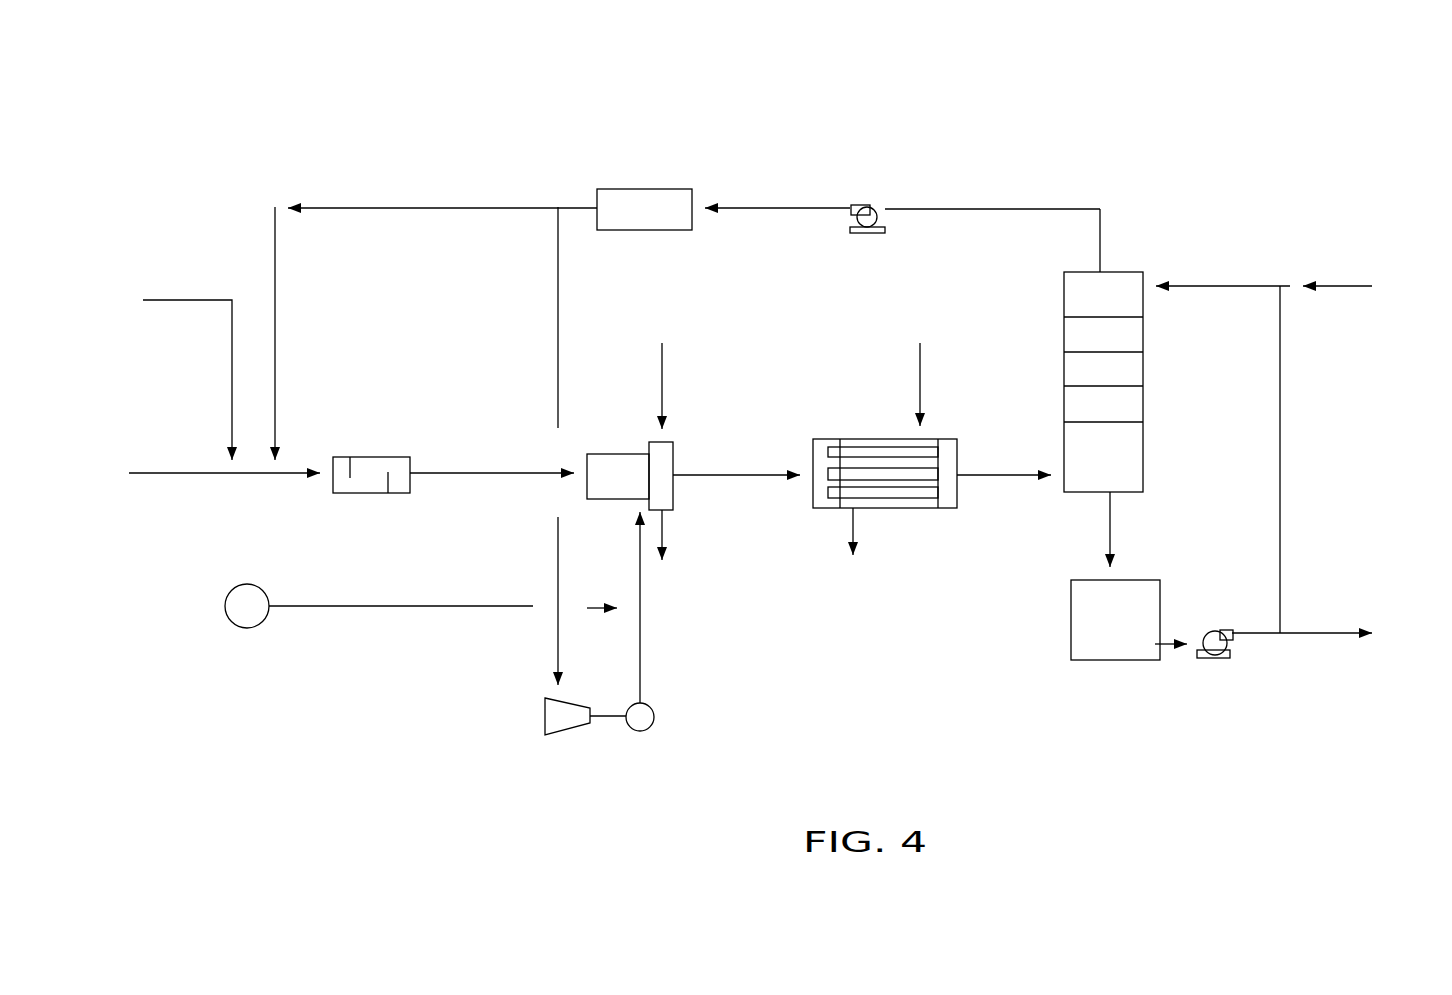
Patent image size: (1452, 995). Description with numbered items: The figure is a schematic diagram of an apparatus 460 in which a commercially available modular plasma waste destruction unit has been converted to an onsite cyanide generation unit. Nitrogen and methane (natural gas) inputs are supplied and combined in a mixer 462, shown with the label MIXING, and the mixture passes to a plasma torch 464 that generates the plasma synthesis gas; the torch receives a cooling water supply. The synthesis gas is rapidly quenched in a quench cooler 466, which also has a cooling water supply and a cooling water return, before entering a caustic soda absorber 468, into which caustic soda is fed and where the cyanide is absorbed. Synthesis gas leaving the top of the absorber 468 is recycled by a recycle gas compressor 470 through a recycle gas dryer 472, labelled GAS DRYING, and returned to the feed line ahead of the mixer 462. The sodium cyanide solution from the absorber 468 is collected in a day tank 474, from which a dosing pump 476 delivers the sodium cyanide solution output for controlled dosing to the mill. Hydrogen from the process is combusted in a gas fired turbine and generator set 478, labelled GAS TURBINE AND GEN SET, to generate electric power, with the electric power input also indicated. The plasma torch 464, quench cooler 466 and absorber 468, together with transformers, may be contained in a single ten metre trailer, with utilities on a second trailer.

The apparatus 460 is at (1232, 173).
The mixer 462 is at (388, 514).
The plasma torch 464 is at (693, 432).
The quench cooler 466 is at (918, 534).
The caustic soda absorber 468 is at (1157, 385).
The recycle gas compressor 470 is at (880, 186).
The recycle gas dryer 472 is at (644, 130).
The day tank 474 is at (1097, 680).
The dosing pump 476 is at (1237, 682).
The gas fired turbine and generator set 478 is at (521, 735).